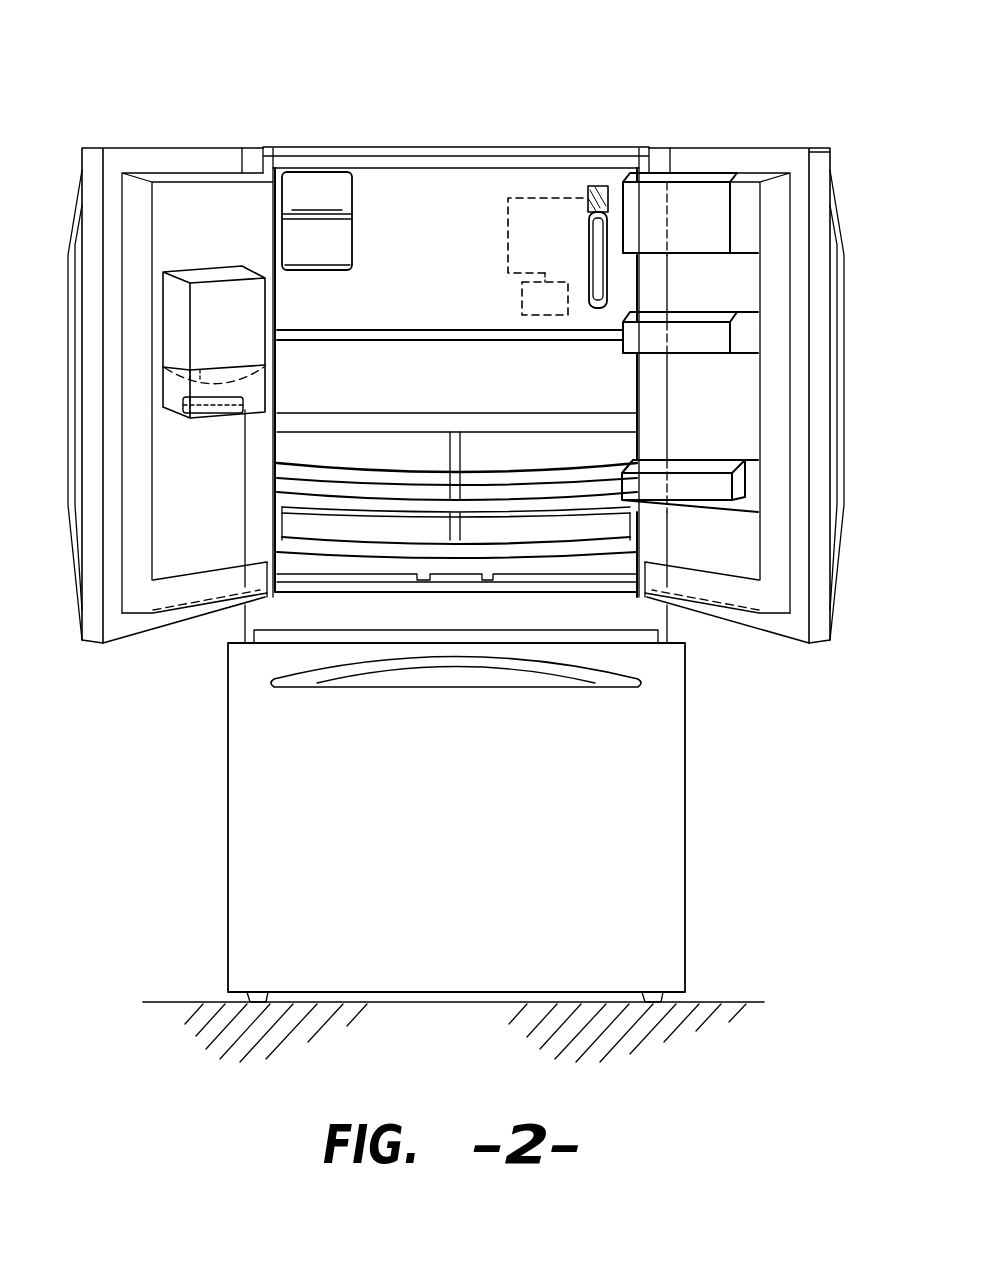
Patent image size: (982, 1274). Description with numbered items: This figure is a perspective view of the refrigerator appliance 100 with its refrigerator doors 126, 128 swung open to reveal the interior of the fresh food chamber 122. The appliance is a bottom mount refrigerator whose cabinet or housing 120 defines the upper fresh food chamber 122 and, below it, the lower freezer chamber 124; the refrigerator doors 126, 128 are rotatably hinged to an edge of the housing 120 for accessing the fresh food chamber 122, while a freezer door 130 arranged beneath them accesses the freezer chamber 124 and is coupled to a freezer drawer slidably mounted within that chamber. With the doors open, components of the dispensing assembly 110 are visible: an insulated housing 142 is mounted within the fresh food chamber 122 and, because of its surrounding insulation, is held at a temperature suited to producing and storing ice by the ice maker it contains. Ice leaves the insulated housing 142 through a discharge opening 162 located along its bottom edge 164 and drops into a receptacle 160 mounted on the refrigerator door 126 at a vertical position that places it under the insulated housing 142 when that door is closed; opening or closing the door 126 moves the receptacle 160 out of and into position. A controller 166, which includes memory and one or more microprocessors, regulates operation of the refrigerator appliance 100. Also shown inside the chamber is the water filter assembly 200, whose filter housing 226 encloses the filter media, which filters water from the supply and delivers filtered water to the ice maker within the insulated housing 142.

The refrigerator appliance 100 is at (688, 92).
The dispensing assembly 110 is at (260, 220).
The housing 120 is at (228, 897).
The fresh food chamber 122 is at (410, 200).
The freezer chamber 124 is at (650, 762).
The refrigerator door 126 is at (131, 147).
The refrigerator door 128 is at (728, 147).
The freezer door 130 is at (645, 868).
The insulated housing 142 is at (317, 193).
The receptacle 160 is at (213, 300).
The discharge opening 162 is at (327, 272).
The bottom edge 164 is at (313, 272).
The controller 166 is at (522, 302).
The water filter assembly 200 is at (562, 213).
The filter housing 226 is at (597, 230).